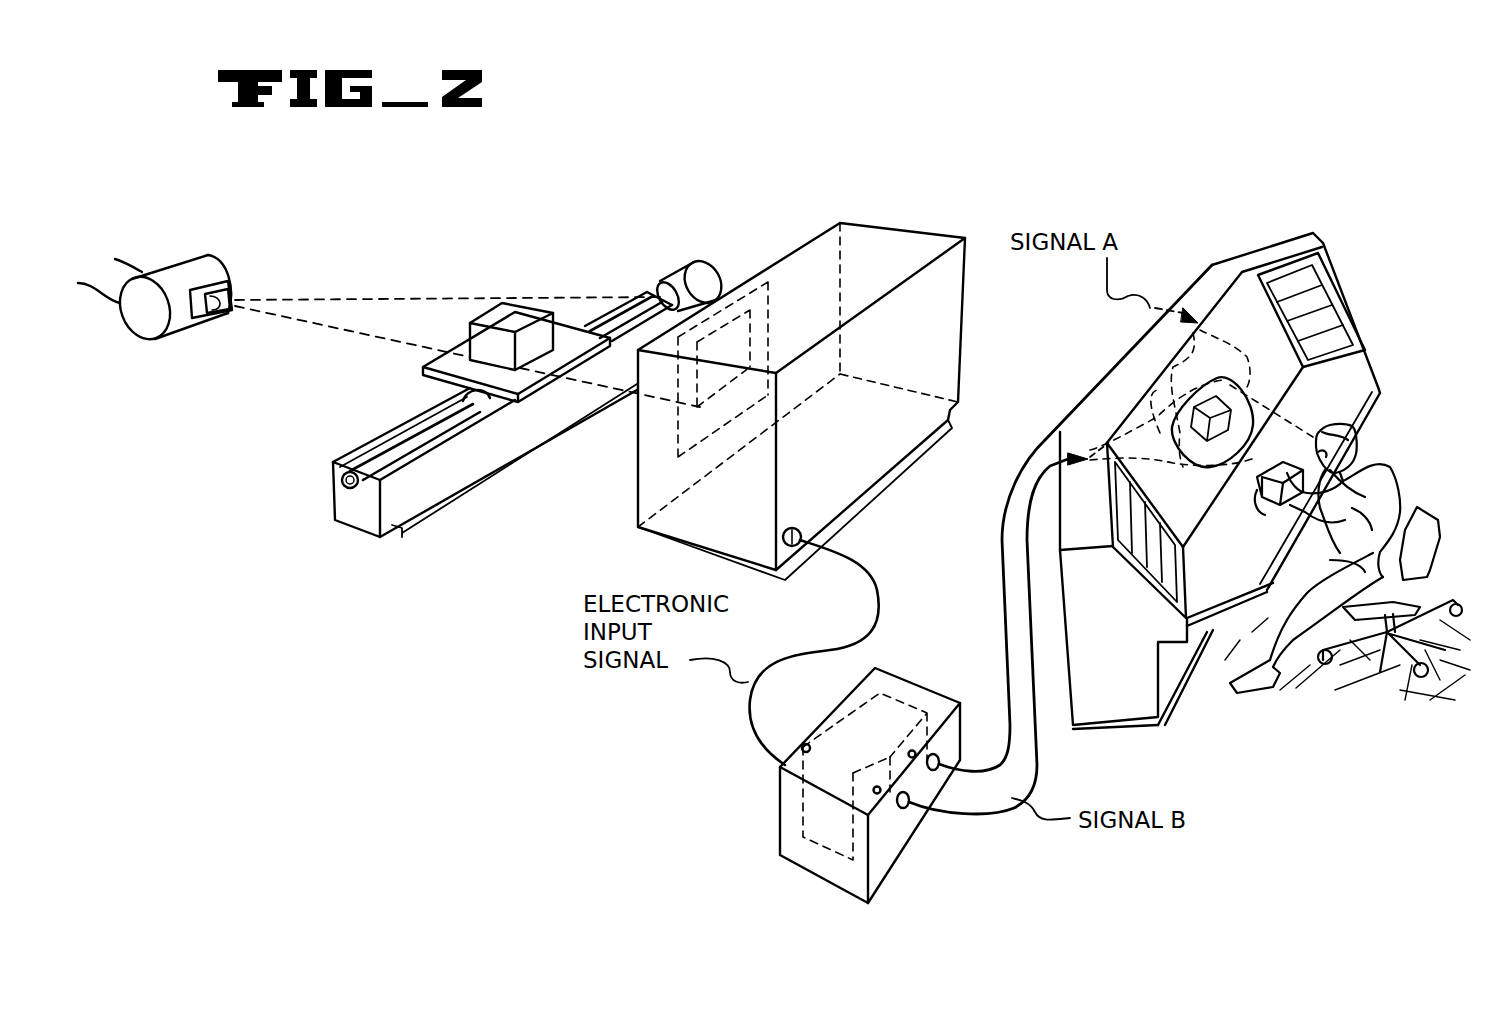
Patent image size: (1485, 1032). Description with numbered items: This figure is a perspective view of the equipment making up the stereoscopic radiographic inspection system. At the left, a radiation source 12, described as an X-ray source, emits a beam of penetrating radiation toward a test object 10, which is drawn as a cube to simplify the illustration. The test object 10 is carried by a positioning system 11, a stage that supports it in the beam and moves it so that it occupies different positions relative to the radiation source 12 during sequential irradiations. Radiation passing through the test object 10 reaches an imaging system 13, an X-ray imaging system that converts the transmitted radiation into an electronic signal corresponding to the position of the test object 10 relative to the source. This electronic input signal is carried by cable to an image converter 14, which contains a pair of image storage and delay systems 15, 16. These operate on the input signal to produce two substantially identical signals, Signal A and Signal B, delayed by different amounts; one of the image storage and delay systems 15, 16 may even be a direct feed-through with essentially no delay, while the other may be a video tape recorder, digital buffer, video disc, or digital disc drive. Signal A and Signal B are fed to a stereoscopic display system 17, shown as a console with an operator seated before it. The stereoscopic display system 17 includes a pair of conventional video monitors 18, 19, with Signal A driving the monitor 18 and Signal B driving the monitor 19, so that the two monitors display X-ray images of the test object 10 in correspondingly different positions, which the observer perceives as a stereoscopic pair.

The test object 10 is at (470, 337).
The positioning system 11 is at (335, 523).
The radiation source 12 is at (232, 283).
The imaging system 13 is at (868, 222).
The image converter 14 is at (812, 773).
The image storage and delay system 15 is at (893, 694).
The image storage and delay system 16 is at (828, 845).
The stereoscopic display system 17 is at (1220, 458).
The video monitor 18 is at (1246, 393).
The video monitor 19 is at (1165, 481).